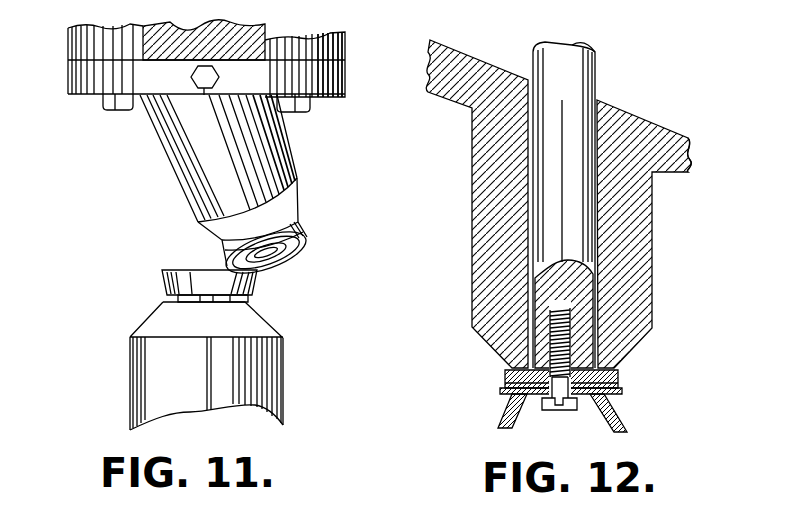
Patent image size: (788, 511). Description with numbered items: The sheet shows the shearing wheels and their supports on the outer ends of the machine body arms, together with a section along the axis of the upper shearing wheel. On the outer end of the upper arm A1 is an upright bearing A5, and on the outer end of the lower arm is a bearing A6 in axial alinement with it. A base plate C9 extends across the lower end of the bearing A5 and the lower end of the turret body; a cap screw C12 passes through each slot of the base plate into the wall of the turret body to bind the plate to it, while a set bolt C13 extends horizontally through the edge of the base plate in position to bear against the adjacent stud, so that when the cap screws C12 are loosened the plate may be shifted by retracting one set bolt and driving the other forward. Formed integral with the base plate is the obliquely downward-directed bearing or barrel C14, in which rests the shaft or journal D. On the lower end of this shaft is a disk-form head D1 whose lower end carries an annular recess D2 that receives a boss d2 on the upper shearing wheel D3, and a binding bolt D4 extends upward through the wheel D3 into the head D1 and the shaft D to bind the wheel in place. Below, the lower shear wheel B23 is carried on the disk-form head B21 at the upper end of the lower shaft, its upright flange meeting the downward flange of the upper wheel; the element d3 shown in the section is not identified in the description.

In FIG. 11, the upper arm A1 is at (147, 27).
In FIG. 11, the upright bearing A5 is at (78, 48).
In FIG. 11, the base plate C9 is at (341, 79).
In FIG. 12, the base plate C9 is at (692, 166).
In FIG. 11, the cap screw C12 is at (106, 103).
In FIG. 11, the set bolt C13 is at (203, 78).
In FIG. 11, the obliquely downward-directed bearing or barrel C14 is at (205, 152).
In FIG. 12, the obliquely downward-directed bearing or barrel C14 is at (628, 221).
In FIG. 11, the disk-form head D1 is at (288, 222).
In FIG. 12, the disk-form head D1 is at (618, 376).
In FIG. 11, the lower shear wheel B23 is at (162, 278).
In FIG. 11, the disk-form head B21 is at (248, 297).
In FIG. 11, the bearing A6 is at (147, 396).
In FIG. 12, the shaft or journal D is at (562, 101).
In FIG. 12, the annular recess D2 is at (512, 371).
In FIG. 12, the boss d2 is at (507, 378).
In FIG. 12, the upper shearing wheel D3 is at (500, 404).
In FIG. 12, the binding bolt D4 is at (542, 410).
In FIG. 12, the legs d3 is at (624, 418).